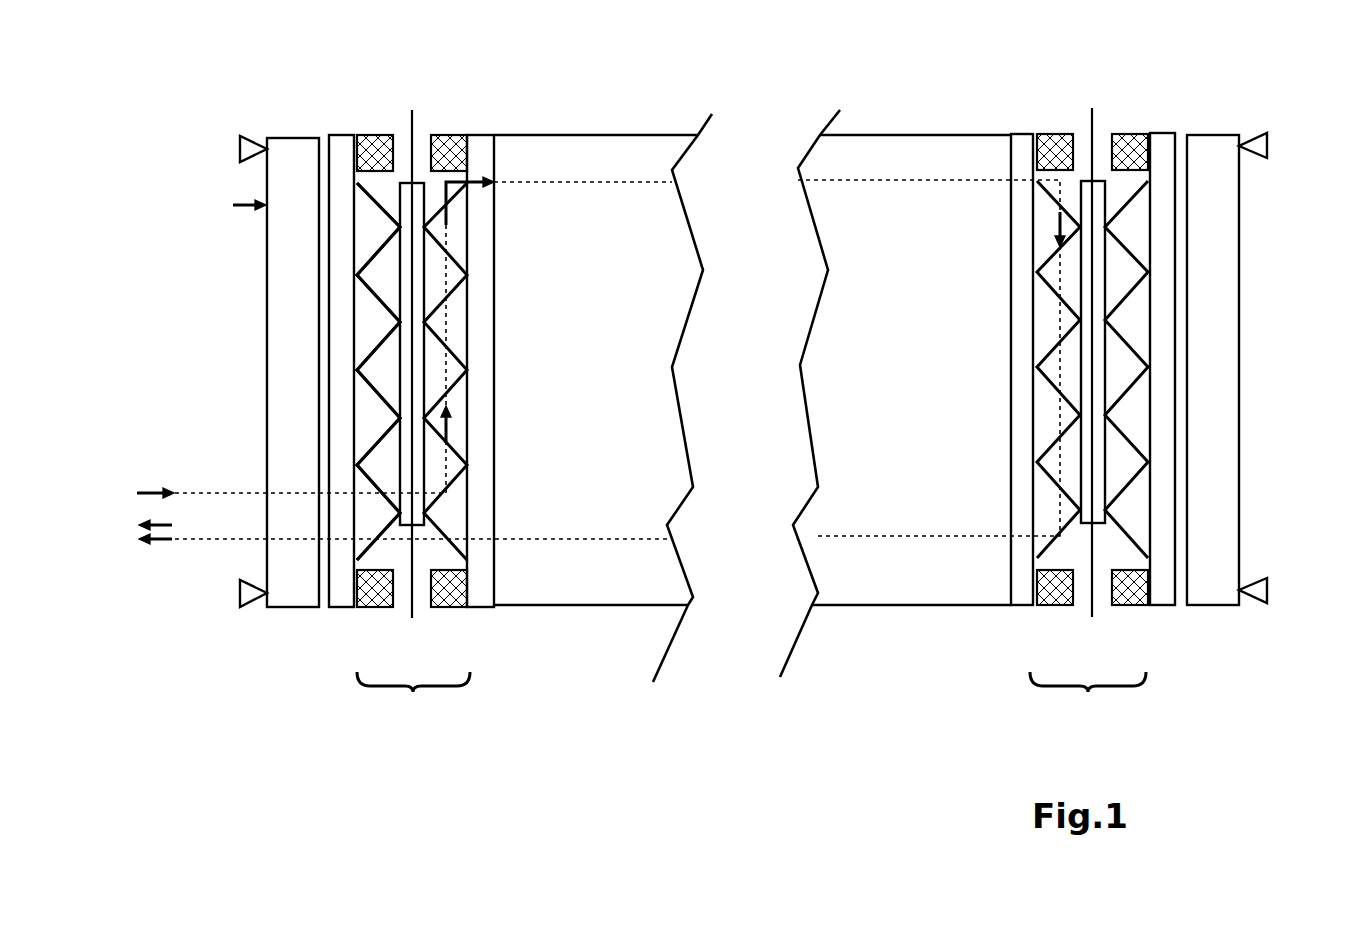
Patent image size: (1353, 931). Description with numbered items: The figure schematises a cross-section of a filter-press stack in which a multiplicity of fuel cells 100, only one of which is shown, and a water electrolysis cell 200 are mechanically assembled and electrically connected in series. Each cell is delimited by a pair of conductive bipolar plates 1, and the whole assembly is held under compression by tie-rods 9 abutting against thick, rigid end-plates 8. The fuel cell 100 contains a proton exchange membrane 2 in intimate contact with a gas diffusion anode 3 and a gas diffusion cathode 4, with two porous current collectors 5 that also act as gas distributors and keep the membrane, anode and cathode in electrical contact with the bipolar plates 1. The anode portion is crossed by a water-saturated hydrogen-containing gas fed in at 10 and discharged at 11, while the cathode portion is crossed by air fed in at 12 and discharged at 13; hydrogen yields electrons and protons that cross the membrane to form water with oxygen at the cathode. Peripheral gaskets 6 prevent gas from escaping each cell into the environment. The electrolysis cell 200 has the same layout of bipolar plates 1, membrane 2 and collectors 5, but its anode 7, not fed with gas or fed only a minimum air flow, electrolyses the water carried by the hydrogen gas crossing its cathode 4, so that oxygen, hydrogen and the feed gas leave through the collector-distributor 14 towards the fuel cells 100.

The bipolar plates 1 is at (342, 137).
The proton exchange membrane 2 is at (413, 272).
The gas diffusion anode 3 is at (1087, 373).
The gas diffusion cathode 4 is at (422, 312).
The porous current collectors 5 is at (373, 397).
The peripheral gaskets 6 is at (380, 608).
The anode 7 is at (402, 348).
The end-plates 8 is at (290, 268).
The tie-rods 9 is at (240, 137).
The hydrogen-containing gas feed 10 is at (140, 490).
The exhaust hydrogen-containing gas discharge 11 is at (157, 543).
The air feed 12 is at (233, 206).
The air discharge 13 is at (172, 525).
The collector-distributor 14 is at (535, 180).
The fuel cell 100 is at (1088, 697).
The water electrolysis cell 200 is at (413, 697).